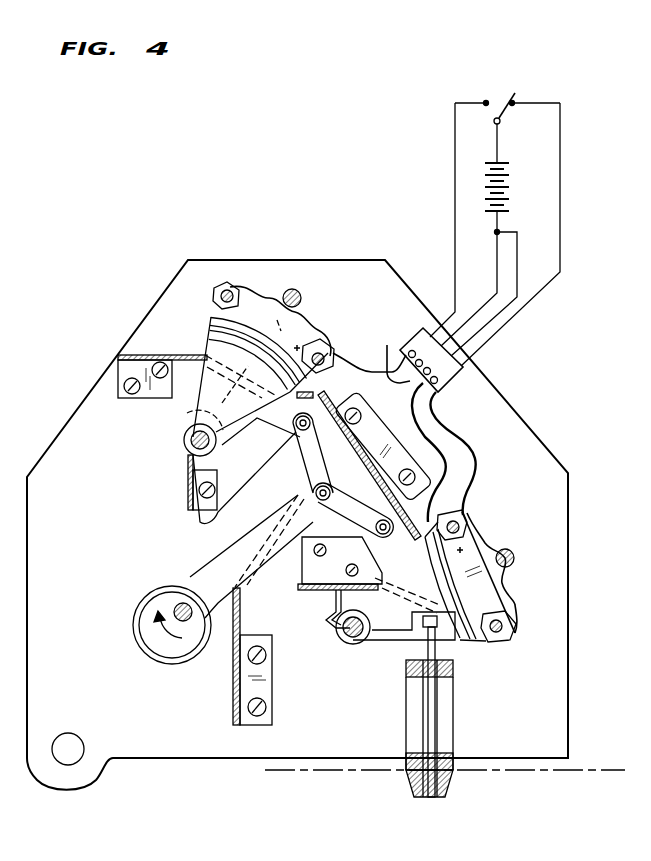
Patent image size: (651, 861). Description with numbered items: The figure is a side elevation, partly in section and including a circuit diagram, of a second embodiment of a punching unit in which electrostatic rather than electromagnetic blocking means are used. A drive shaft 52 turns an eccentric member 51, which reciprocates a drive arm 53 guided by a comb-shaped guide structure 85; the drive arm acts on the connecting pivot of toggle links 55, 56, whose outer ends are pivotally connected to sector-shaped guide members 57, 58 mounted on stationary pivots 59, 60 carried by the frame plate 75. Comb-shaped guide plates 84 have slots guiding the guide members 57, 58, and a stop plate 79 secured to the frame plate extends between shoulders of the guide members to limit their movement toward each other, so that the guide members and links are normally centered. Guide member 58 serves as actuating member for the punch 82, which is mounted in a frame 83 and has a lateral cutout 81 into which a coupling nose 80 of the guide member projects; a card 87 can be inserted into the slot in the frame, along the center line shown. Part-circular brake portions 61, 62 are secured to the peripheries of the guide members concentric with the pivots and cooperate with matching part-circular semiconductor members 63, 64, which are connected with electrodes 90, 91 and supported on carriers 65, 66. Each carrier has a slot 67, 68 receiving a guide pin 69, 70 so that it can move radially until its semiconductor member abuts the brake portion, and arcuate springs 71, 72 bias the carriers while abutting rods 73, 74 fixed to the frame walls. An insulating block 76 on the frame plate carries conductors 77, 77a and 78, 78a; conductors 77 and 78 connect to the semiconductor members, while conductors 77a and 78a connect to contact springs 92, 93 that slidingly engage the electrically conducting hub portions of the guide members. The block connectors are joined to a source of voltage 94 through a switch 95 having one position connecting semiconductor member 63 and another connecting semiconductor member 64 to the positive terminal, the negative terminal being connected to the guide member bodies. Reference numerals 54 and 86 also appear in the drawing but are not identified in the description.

The eccentric member 51 is at (155, 638).
The drive shaft 52 is at (178, 604).
The drive arm 53 is at (210, 578).
The connecting rod alternate position 54 is at (304, 508).
The toggle link 55 is at (300, 438).
The toggle link 56 is at (360, 512).
The guide member 57 is at (197, 407).
The guide member 58 is at (390, 645).
The stationary pivot 59 is at (183, 440).
The stationary pivot 60 is at (352, 645).
The part-circular brake portion 61 is at (306, 316).
The part-circular brake portion 62 is at (505, 618).
The semiconductor member 63 is at (326, 345).
The semiconductor member 64 is at (470, 600).
The carrier 65 is at (260, 335).
The carrier 66 is at (470, 538).
The slot 67 is at (222, 300).
The slot 68 is at (506, 632).
The guide pin 69 is at (220, 300).
The guide pin 70 is at (494, 640).
The arcuate spring 71 is at (256, 298).
The arcuate spring 72 is at (482, 528).
The rod 73 is at (293, 288).
The rod 74 is at (512, 566).
The frame plate 75 is at (493, 396).
The insulating block 76 is at (453, 372).
The conductor 77 is at (372, 371).
The conductor 77a is at (387, 355).
The conductor 78 is at (468, 440).
The conductor 78a is at (452, 460).
The stop plate 79 is at (398, 458).
The coupling nose 80 is at (455, 665).
The lateral cutout 81 is at (428, 662).
The punch 82 is at (423, 722).
The frame 83 is at (445, 730).
The comb-shaped guide plate 84 is at (190, 355).
The comb-shaped guide structure 85 is at (234, 684).
The stop bracket 86 is at (300, 582).
The card 87 is at (334, 775).
The electrode 90 is at (262, 322).
The electrode 91 is at (480, 560).
The contact spring 92 is at (190, 458).
The contact spring 93 is at (330, 608).
The source of voltage 94 is at (508, 182).
The switch 95 is at (497, 100).